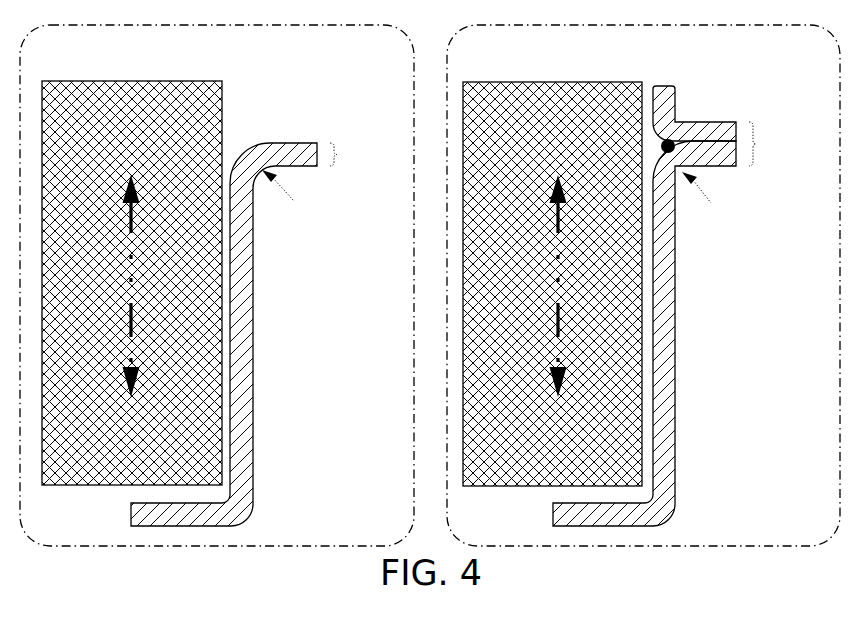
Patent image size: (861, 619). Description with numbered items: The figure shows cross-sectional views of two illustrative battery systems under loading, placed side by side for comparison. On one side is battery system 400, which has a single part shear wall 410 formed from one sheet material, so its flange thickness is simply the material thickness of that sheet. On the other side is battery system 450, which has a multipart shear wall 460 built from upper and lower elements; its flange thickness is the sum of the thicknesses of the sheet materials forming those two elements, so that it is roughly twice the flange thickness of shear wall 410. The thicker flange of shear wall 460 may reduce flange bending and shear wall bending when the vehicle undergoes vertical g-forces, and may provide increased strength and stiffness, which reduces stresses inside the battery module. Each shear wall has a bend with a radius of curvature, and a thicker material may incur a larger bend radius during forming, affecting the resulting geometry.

The battery system 400 is at (186, 76).
The single part shear wall 410 is at (254, 385).
The battery system 450 is at (597, 74).
The multipart shear wall 460 is at (675, 398).